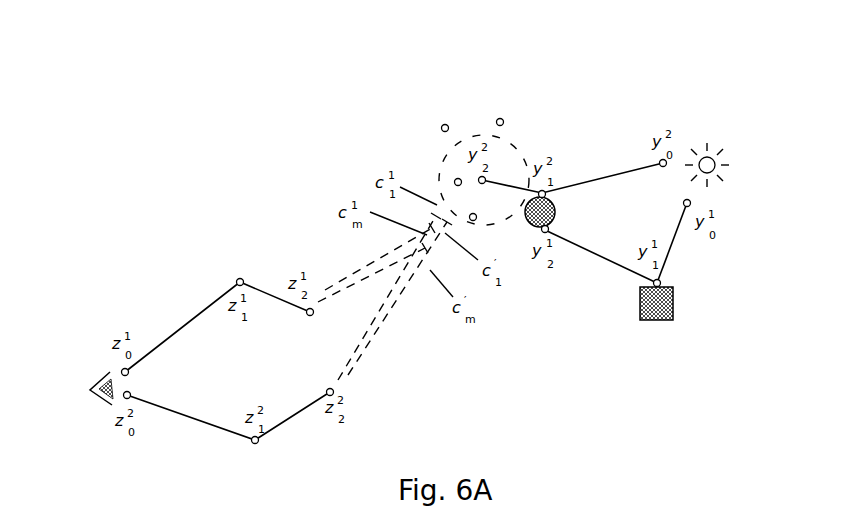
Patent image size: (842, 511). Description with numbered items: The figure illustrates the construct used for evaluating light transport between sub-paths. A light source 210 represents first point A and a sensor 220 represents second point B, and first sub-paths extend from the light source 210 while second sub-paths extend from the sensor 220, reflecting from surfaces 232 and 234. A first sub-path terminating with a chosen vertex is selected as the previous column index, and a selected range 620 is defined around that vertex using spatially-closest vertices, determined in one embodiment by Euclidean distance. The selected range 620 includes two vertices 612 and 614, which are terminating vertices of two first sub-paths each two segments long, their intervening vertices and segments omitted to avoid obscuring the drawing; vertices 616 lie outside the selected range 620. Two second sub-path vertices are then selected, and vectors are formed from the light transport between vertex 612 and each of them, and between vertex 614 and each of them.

The light source 210 is at (737, 161).
The sensor 220 is at (71, 401).
The surface 232 is at (683, 308).
The surface 234 is at (557, 214).
The vertex 612 is at (454, 179).
The vertex 614 is at (477, 221).
The vertices 616 is at (448, 125).
The selected range 620 is at (520, 157).